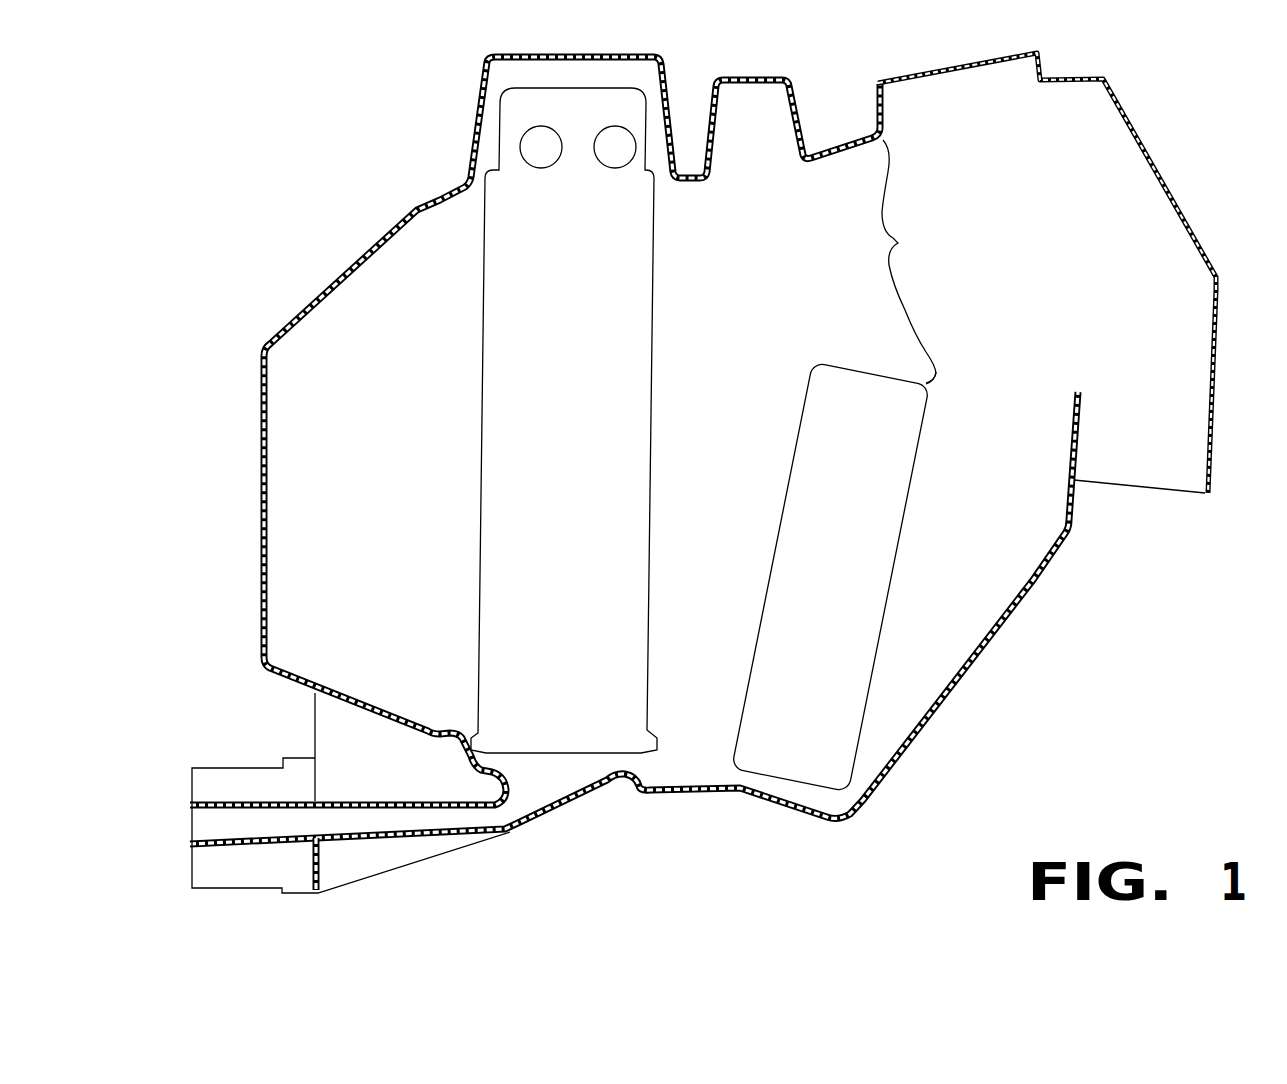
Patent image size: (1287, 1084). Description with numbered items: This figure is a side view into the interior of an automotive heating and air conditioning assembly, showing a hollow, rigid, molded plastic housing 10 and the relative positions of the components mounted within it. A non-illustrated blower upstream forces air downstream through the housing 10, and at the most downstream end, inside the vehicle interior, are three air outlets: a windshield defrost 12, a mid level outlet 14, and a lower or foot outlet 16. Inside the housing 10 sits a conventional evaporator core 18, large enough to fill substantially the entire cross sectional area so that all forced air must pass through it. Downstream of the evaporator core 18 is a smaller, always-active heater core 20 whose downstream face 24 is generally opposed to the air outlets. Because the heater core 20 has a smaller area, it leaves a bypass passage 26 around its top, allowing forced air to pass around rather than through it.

The housing 10 is at (358, 260).
The windshield defrost 12 is at (829, 197).
The mid level outlet 14 is at (1142, 145).
The lower or foot outlet 16 is at (1125, 475).
The evaporator core 18 is at (632, 260).
The heater core 20 is at (931, 400).
The downstream face 24 is at (858, 458).
The bypass passage 26 is at (901, 238).